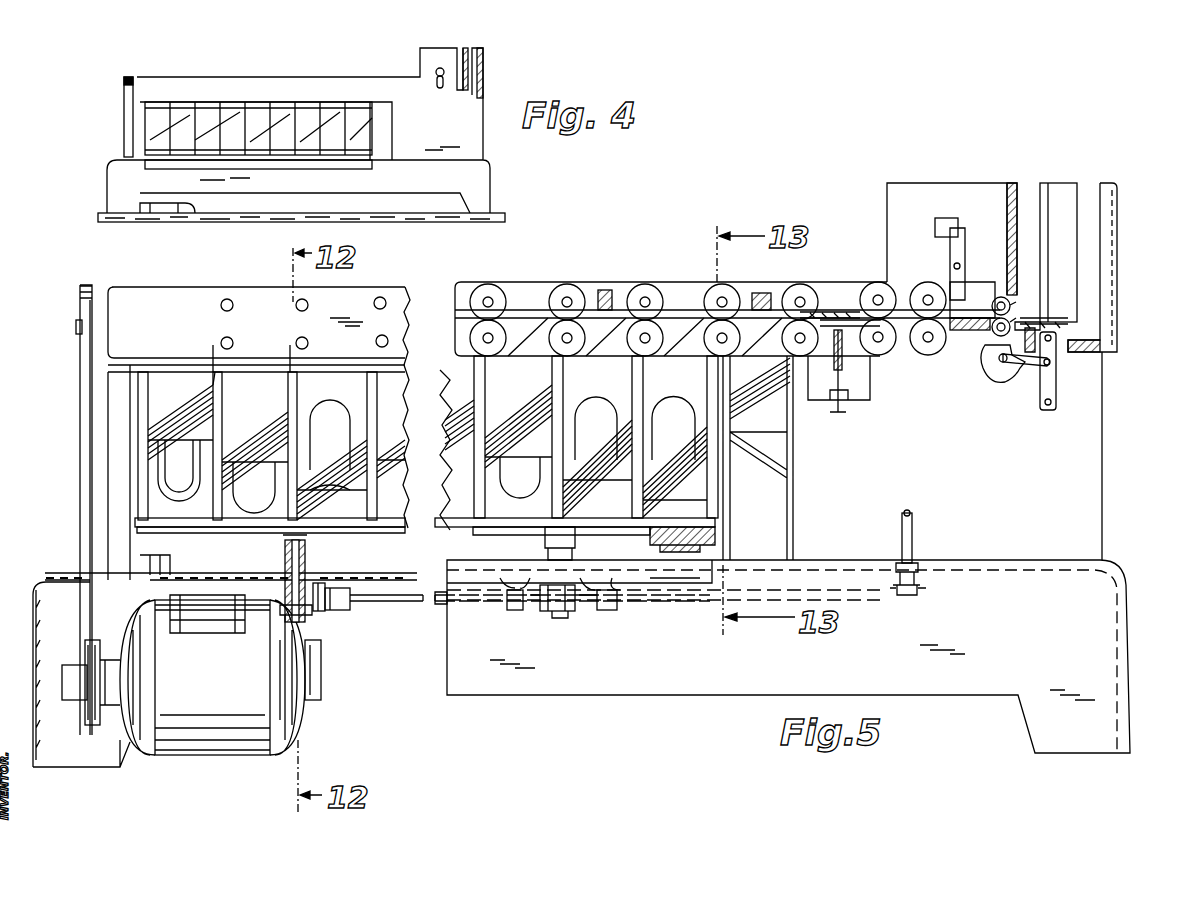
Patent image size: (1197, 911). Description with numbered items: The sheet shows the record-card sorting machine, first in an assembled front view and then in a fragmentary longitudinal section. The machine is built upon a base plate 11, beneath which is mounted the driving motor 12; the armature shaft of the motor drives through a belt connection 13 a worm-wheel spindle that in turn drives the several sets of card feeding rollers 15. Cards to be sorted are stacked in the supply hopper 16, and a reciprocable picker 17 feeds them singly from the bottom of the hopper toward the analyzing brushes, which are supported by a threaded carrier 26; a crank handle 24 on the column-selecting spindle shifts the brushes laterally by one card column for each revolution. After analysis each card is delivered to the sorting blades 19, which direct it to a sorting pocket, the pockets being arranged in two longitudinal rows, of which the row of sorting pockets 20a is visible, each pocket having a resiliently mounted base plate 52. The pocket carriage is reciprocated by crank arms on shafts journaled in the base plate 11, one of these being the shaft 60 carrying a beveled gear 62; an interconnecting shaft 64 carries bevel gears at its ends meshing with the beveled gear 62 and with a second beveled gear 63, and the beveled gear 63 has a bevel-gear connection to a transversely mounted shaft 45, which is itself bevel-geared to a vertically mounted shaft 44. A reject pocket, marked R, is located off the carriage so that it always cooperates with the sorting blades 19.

In FIG. 4, the base plate 11 is at (472, 180).
In FIG. 5, the base plate 11 is at (72, 590).
In FIG. 4, the driving motor 12 is at (165, 205).
In FIG. 5, the driving motor 12 is at (278, 703).
In FIG. 5, the belt connection 13 is at (82, 405).
In FIG. 5, the card feeding rollers 15 is at (568, 290).
In FIG. 4, the supply hopper 16 is at (470, 66).
In FIG. 5, the supply hopper 16 is at (1068, 190).
In FIG. 5, the reciprocable picker 17 is at (1030, 318).
In FIG. 5, the sorting blades 19 is at (835, 316).
In FIG. 5, the row of sorting pockets 20a is at (680, 390).
In FIG. 4, the crank handle 24 is at (435, 74).
In FIG. 5, the carrier 26 is at (981, 290).
In FIG. 5, the vertically mounted shaft 44 is at (913, 524).
In FIG. 5, the transversely mounted shaft 45 is at (708, 595).
In FIG. 5, the resiliently mounted base plate 52 is at (357, 468).
In FIG. 5, the shaft 60 is at (305, 565).
In FIG. 5, the beveled gear 62 is at (305, 615).
In FIG. 5, the beveled gear 63 is at (575, 606).
In FIG. 5, the shaft 64 is at (375, 602).